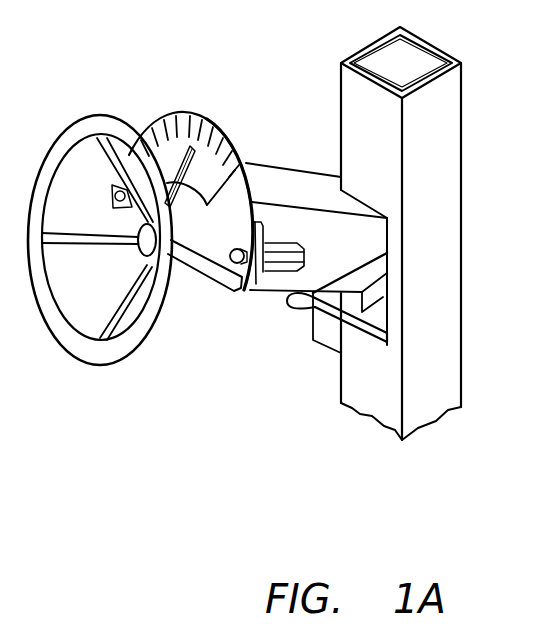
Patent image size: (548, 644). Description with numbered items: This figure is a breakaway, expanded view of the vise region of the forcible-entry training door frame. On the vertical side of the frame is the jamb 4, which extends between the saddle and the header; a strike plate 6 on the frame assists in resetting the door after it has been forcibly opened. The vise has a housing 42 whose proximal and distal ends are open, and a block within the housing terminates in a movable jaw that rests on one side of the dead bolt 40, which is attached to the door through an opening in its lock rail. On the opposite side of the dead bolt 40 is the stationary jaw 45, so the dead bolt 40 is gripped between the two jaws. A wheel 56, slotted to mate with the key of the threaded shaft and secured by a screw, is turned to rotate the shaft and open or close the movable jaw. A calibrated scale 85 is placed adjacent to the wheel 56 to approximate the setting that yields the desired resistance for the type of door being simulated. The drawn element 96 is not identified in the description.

The jamb 4 is at (440, 243).
The strike plate 6 is at (367, 332).
The dead bolt 40 is at (312, 319).
The housing 42 is at (267, 193).
The stationary jaw 45 is at (380, 317).
The wheel 56 is at (98, 122).
The scale 85 is at (192, 123).
The mounting block 96 is at (327, 334).